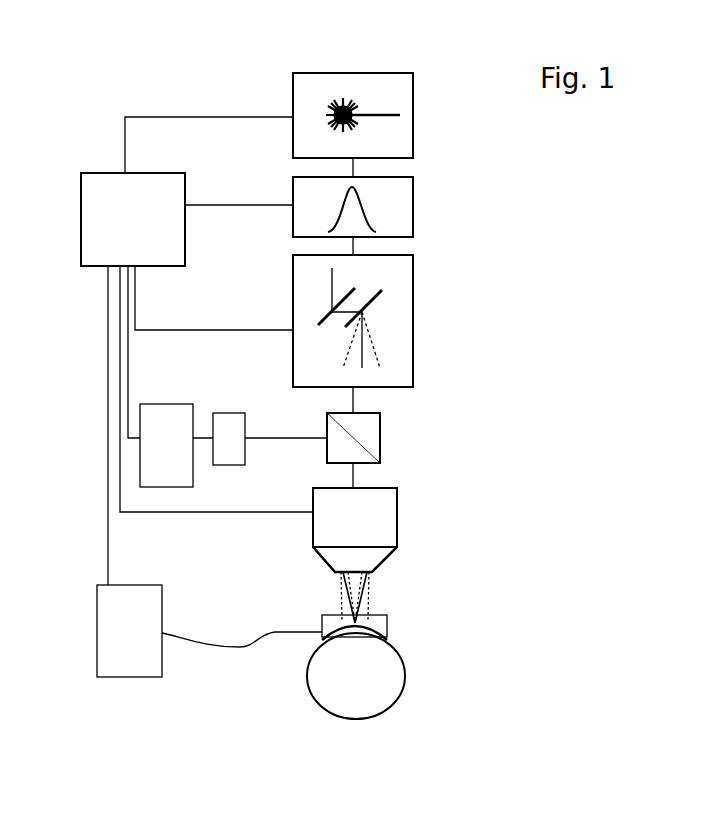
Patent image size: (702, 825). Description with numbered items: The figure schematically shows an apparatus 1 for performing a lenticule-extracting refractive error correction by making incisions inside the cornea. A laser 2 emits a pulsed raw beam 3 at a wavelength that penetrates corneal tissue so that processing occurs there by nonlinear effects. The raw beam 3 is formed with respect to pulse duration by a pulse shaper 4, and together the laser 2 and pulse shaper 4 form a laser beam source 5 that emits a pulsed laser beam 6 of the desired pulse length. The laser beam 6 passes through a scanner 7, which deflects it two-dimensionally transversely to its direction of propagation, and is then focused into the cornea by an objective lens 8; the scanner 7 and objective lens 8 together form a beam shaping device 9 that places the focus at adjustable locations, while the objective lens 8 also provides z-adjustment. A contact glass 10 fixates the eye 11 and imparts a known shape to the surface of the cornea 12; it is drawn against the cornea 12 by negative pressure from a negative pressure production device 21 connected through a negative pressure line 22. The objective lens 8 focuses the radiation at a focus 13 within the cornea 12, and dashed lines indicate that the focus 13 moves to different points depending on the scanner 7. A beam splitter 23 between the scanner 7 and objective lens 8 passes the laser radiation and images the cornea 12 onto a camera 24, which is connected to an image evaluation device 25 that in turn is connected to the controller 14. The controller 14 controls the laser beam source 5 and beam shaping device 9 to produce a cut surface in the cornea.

The apparatus 1 is at (150, 58).
The laser 2 is at (402, 92).
The pulsed raw beam 3 is at (350, 167).
The pulse shaper 4 is at (405, 207).
The laser beam source 5 is at (493, 118).
The pulsed laser beam 6 is at (350, 243).
The scanner 7 is at (405, 328).
The objective lens 8 is at (382, 510).
The beam shaping device 9 is at (453, 513).
The contact glass 10 is at (322, 620).
The eye 11 is at (322, 693).
The cornea 12 is at (355, 623).
The focus 13 is at (352, 626).
The controller 14 is at (92, 228).
The negative pressure production device 21 is at (123, 663).
The negative pressure line 22 is at (207, 647).
The beam splitter 23 is at (365, 430).
The camera 24 is at (232, 425).
The image evaluation device 25 is at (168, 418).